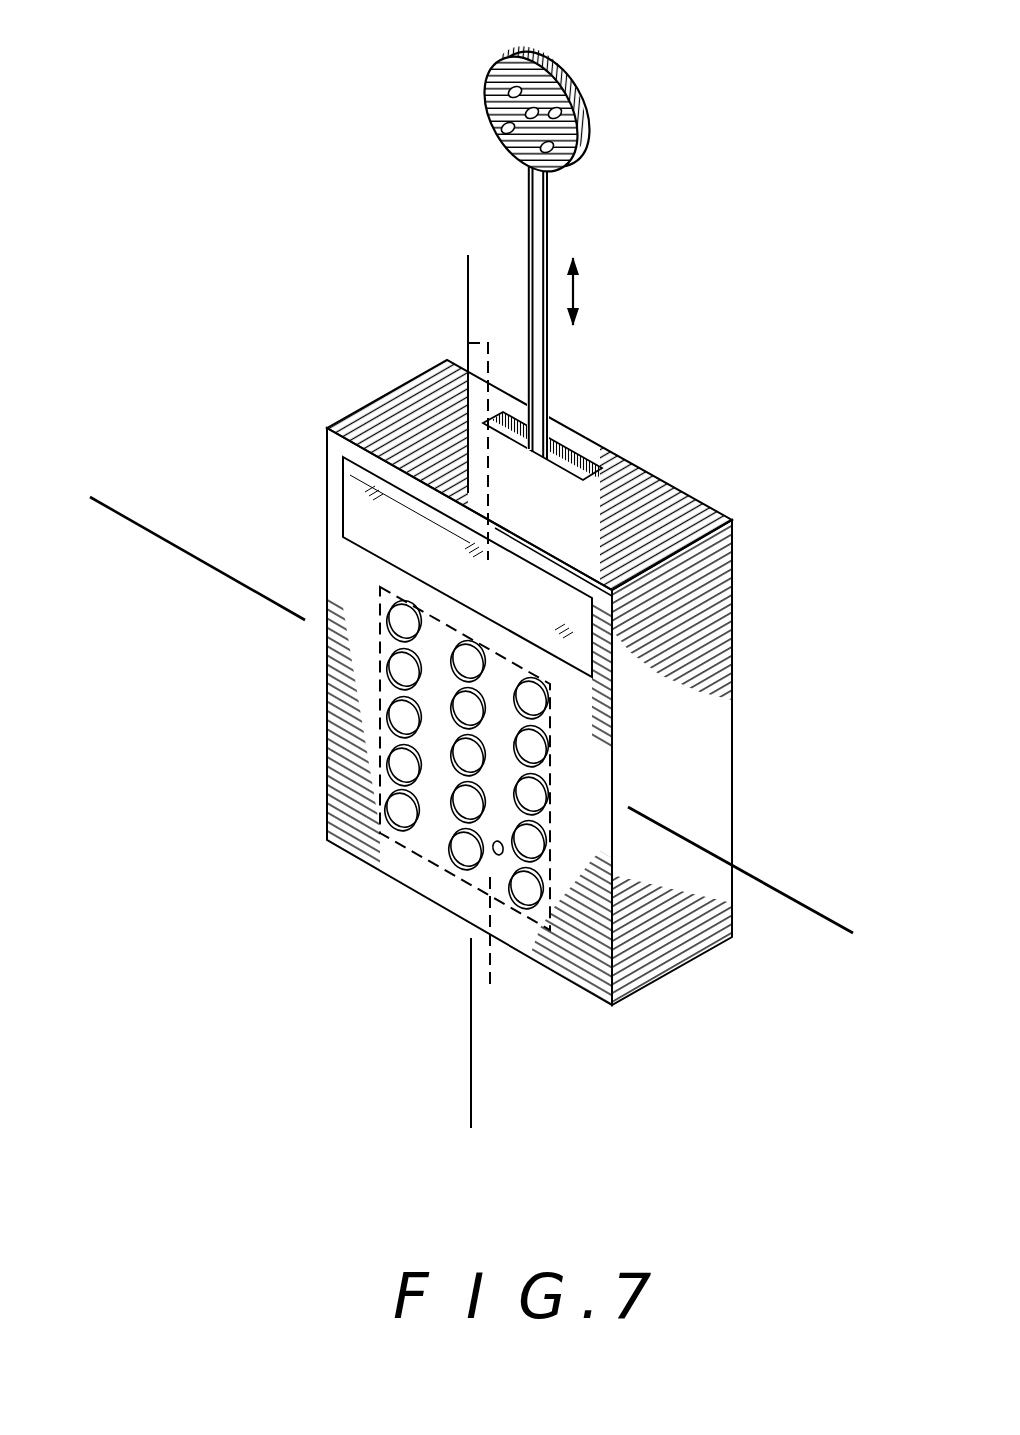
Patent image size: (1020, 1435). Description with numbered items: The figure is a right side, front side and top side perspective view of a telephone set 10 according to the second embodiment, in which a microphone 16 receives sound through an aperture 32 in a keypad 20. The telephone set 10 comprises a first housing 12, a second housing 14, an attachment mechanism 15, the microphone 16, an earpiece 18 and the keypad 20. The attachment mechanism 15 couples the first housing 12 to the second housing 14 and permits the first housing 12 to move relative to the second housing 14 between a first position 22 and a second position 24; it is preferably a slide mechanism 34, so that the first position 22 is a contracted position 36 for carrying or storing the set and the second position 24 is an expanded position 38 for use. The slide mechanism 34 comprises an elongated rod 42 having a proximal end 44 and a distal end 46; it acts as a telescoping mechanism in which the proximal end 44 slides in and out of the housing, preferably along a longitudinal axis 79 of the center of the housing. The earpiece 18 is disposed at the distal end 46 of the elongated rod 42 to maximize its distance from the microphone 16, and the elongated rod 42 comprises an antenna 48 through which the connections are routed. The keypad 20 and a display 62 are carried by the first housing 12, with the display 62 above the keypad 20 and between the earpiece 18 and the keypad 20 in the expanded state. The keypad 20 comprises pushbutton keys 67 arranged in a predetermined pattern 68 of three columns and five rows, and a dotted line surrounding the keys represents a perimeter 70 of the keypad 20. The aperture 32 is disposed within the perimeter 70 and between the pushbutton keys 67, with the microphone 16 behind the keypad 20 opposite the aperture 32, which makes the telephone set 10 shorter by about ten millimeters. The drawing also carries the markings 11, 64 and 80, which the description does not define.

The telephone set 10 is at (793, 1083).
The pivot axis 11 is at (480, 347).
The first housing 12 is at (720, 827).
The second housing 14 is at (527, 241).
The attachment mechanism 15 is at (681, 476).
The microphone 16 is at (490, 863).
The earpiece 18 is at (588, 120).
The keypad 20 is at (433, 823).
The first position 22 is at (628, 292).
The second position 24 is at (628, 292).
The aperture 32 is at (498, 856).
The slide mechanism 34 is at (635, 445).
The contracted position 36 is at (628, 292).
The expanded position 38 is at (628, 292).
The elongated rod 42 is at (527, 241).
The proximal end 44 is at (543, 437).
The distal end 46 is at (562, 95).
The antenna 48 is at (561, 320).
The display 62 is at (353, 487).
The display window 64 is at (566, 603).
The pushbutton keys 67 is at (534, 810).
The predetermined pattern 68 is at (560, 774).
The perimeter 70 is at (530, 755).
The longitudinal axis 79 is at (471, 1103).
The axis line 80 is at (197, 546).